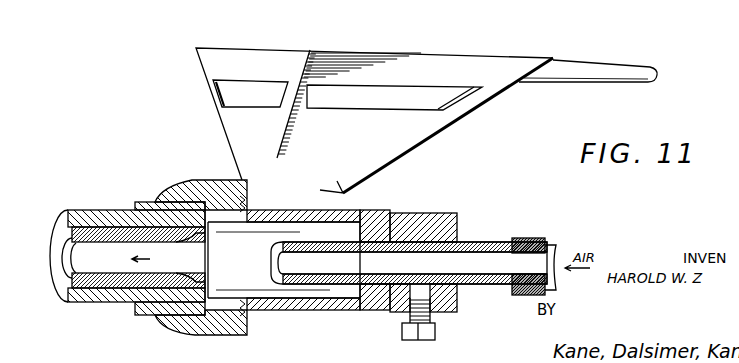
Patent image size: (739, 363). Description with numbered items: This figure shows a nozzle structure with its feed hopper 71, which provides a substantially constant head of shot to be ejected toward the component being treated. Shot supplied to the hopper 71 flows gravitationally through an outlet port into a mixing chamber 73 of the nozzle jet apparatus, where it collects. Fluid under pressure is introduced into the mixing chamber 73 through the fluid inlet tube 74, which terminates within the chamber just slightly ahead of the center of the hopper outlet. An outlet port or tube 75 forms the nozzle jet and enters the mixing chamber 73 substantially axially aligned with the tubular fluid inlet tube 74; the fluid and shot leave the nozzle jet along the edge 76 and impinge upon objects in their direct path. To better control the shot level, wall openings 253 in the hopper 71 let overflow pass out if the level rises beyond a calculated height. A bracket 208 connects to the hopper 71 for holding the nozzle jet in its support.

The hopper 71 is at (436, 122).
The wall openings 253 is at (214, 95).
The bracket 208 is at (607, 69).
The mixing chamber 73 is at (252, 286).
The fluid inlet tube 74 is at (474, 265).
The outlet port or tube 75 is at (98, 267).
The edge 76 is at (66, 258).